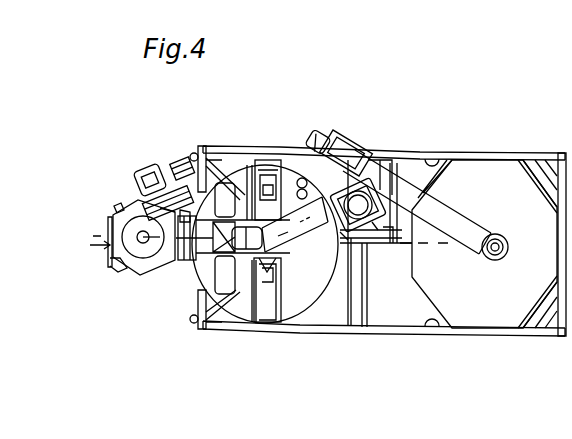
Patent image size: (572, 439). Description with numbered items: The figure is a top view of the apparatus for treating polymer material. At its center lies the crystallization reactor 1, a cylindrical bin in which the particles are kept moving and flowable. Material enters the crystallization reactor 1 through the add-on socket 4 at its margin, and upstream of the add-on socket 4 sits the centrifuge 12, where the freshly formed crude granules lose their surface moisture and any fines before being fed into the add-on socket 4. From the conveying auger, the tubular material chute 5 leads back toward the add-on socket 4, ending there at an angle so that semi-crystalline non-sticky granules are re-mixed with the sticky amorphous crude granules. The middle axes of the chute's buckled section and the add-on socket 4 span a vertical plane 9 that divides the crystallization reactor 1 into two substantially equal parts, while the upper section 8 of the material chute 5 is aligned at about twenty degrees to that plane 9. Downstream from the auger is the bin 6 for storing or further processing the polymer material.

The crystallization reactor 1 is at (295, 305).
The add-on socket 4 is at (191, 270).
The material chute 5 is at (313, 243).
The bin 6 is at (488, 177).
The upper section 8 is at (323, 228).
The plane 9 is at (431, 249).
The centrifuge 12 is at (137, 208).